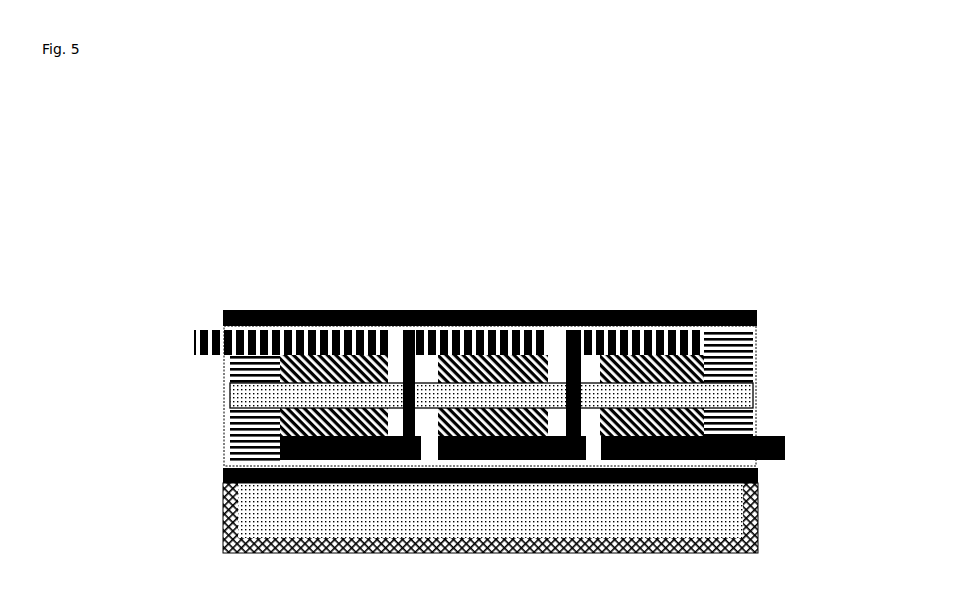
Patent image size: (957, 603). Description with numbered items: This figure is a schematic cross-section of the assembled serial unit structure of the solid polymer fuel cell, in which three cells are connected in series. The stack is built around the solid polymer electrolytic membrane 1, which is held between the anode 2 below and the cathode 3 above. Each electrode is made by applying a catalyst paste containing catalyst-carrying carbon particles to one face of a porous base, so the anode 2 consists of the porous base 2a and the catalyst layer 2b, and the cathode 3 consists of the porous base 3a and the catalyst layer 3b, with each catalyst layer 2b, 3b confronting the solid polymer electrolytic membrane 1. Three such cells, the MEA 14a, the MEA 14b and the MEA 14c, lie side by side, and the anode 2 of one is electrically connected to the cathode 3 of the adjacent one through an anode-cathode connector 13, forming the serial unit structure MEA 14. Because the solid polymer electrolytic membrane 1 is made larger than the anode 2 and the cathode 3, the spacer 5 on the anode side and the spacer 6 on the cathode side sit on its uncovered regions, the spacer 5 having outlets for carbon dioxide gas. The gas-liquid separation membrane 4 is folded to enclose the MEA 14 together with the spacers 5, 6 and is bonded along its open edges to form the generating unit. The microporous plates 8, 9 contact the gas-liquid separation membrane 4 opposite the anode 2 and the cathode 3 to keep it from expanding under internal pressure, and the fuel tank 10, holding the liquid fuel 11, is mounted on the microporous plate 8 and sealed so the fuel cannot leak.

The solid polymer electrolytic membrane 1 is at (722, 389).
The anode 2 is at (568, 434).
The porous base 2a is at (778, 440).
The catalyst layer 2b is at (746, 411).
The cathode 3 is at (525, 353).
The porous base 3a is at (746, 326).
The catalyst layer 3b is at (746, 357).
The gas-liquid separation membrane 4 is at (220, 381).
The spacer 5 is at (220, 418).
The spacer 6 is at (220, 356).
The microporous plate 8 is at (215, 463).
The microporous plate 9 is at (215, 306).
The fuel tank 10 is at (625, 546).
The liquid fuel 11 is at (350, 515).
The anode-cathode connector 13 is at (577, 302).
The MEA 14 is at (857, 312).
The MEA 14a is at (378, 294).
The MEA 14b is at (535, 294).
The MEA 14c is at (695, 294).